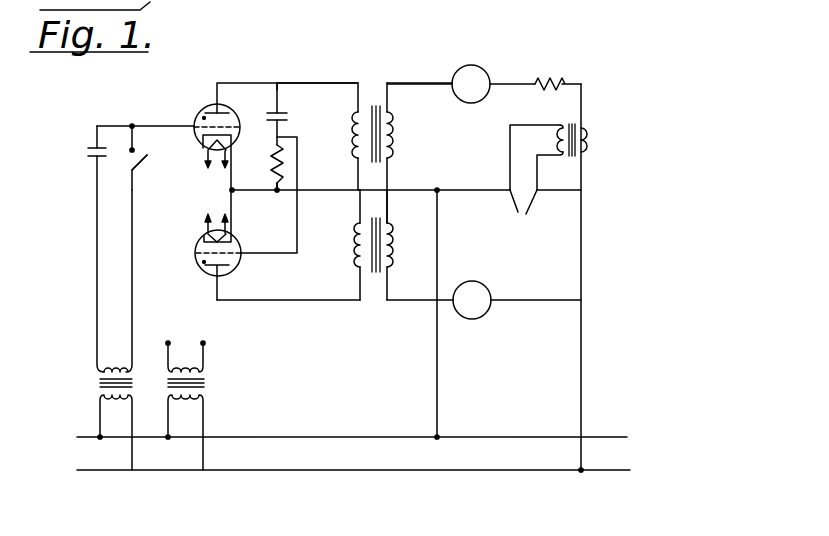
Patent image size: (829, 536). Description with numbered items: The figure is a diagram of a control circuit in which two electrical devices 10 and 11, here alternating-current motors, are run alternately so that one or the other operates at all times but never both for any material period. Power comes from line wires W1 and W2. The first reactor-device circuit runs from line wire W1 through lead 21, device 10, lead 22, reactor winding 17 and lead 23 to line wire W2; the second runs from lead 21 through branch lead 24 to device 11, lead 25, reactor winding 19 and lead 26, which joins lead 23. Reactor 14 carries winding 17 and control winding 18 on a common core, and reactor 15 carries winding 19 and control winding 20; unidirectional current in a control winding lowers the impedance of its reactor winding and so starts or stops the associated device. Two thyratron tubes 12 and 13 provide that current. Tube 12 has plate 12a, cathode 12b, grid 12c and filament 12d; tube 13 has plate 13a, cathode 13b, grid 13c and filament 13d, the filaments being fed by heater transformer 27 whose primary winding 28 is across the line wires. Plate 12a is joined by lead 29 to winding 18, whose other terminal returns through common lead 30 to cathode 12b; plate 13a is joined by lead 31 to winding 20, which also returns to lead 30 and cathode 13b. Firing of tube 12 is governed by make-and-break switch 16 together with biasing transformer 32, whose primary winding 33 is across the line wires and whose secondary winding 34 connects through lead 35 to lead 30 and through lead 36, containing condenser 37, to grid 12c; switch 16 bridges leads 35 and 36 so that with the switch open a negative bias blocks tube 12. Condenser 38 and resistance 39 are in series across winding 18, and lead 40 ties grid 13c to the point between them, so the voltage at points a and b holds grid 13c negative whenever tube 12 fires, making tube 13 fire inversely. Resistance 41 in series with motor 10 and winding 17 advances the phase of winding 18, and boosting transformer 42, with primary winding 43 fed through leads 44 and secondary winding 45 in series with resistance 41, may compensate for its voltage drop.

The electrical device 10 is at (477, 67).
The electrical device 11 is at (488, 287).
The electric-valve tube 12 is at (194, 115).
The anode or plate 12a is at (214, 110).
The cathode 12b is at (200, 142).
The grid 12c is at (236, 112).
The filament 12d is at (208, 158).
The electric-valve tube 13 is at (196, 266).
The anode or plate 13a is at (238, 268).
The cathode 13b is at (234, 250).
The grid 13c is at (197, 254).
The filament 13d is at (205, 234).
The reactor 14 is at (376, 102).
The reactor 15 is at (376, 278).
The make-and-break switch 16 is at (127, 161).
The reactor winding 17 is at (393, 138).
The control winding 18 is at (355, 119).
The reactor winding 19 is at (394, 249).
The control winding 20 is at (355, 240).
The lead 21 is at (582, 84).
The lead 22 is at (426, 83).
The lead 23 is at (416, 190).
The branch lead 24 is at (536, 302).
The lead 25 is at (411, 302).
The lead 26 is at (388, 212).
The heater transformer 27 is at (166, 385).
The primary winding 28 is at (190, 400).
The lead 29 is at (324, 83).
The lead 30 is at (340, 190).
The lead 31 is at (292, 302).
The transformer 32 is at (93, 387).
The primary winding 33 is at (132, 398).
The secondary winding 34 is at (116, 372).
The lead 35 is at (132, 193).
The lead 36 is at (132, 126).
The condenser 37 is at (88, 153).
The condenser 38 is at (282, 108).
The resistance 39 is at (272, 168).
The lead 40 is at (297, 220).
The resistance 41 is at (550, 76).
The boosting transformer 42 is at (569, 154).
The primary winding 43 is at (562, 124).
The leads 44 is at (532, 237).
The secondary winding 45 is at (584, 130).
The point a is at (276, 77).
The point b is at (277, 195).
The line wire W1 is at (496, 471).
The line wire W2 is at (500, 436).